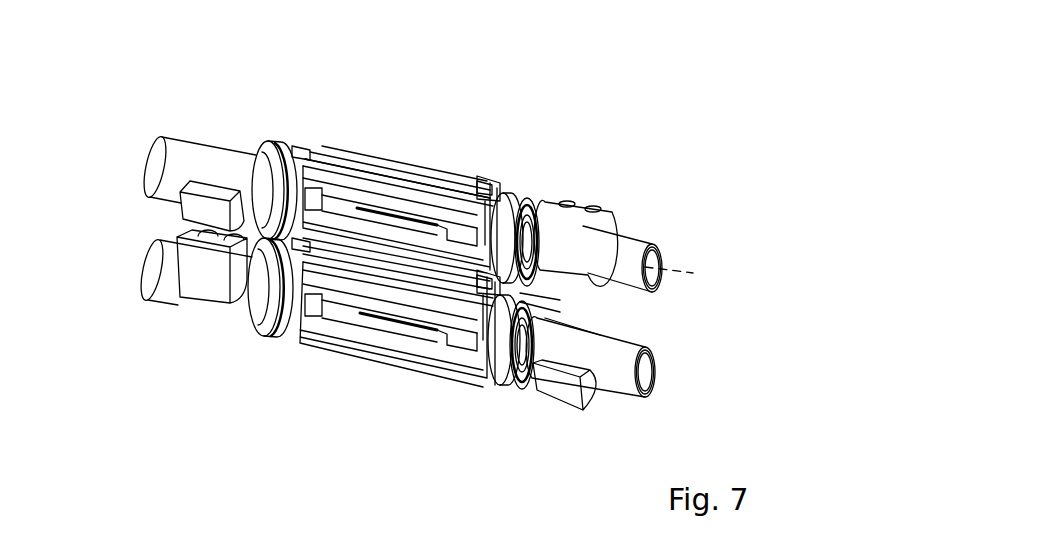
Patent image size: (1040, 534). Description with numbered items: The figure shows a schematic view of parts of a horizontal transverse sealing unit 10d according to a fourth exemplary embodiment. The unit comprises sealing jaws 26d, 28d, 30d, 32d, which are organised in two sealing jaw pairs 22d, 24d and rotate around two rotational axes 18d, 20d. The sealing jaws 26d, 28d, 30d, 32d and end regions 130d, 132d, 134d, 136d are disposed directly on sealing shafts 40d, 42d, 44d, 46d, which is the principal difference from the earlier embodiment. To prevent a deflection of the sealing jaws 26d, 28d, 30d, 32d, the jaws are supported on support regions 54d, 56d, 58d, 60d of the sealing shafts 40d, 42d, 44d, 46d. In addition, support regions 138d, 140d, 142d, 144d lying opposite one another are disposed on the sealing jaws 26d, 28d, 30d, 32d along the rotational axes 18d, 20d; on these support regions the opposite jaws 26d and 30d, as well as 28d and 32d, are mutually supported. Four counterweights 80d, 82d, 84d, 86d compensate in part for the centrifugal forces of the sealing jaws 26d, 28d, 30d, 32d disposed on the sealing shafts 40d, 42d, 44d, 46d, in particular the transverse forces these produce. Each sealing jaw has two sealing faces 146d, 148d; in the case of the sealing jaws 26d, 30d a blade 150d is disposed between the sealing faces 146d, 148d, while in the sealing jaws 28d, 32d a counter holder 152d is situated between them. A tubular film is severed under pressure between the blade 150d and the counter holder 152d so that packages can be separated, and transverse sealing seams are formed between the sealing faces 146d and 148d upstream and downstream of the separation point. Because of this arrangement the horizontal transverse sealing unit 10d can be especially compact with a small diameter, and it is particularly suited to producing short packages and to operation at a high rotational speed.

The horizontal transverse sealing unit 10d is at (395, 255).
The rotational axis 18d is at (693, 273).
The rotational axis 20d is at (688, 380).
The first sealing jaw pair 22d is at (392, 142).
The second sealing jaw pair 24d is at (560, 312).
The sealing jaw 26d is at (473, 187).
The sealing jaw 28d is at (376, 371).
The sealing jaw 30d is at (560, 300).
The sealing jaw 32d is at (600, 335).
The sealing shaft 40d is at (147, 163).
The sealing shaft 42d is at (140, 253).
The sealing shaft 44d is at (650, 390).
The sealing shaft 46d is at (660, 240).
The support region 54d is at (484, 250).
The support region 56d is at (470, 360).
The support region 58d is at (260, 163).
The support region 60d is at (283, 348).
The counterweight 80d is at (187, 207).
The counterweight 82d is at (203, 282).
The counterweight 84d is at (593, 403).
The counterweight 86d is at (620, 220).
The end region 130d is at (513, 240).
The end region 132d is at (517, 383).
The end region 134d is at (277, 173).
The end region 136d is at (283, 340).
The support region 138d is at (387, 210).
The support region 140d is at (350, 365).
The support region 142d is at (340, 330).
The support region 144d is at (415, 230).
The sealing face 146d is at (463, 180).
The sealing face 148d is at (410, 180).
The blade 150d is at (337, 147).
The counter holder 152d is at (357, 307).